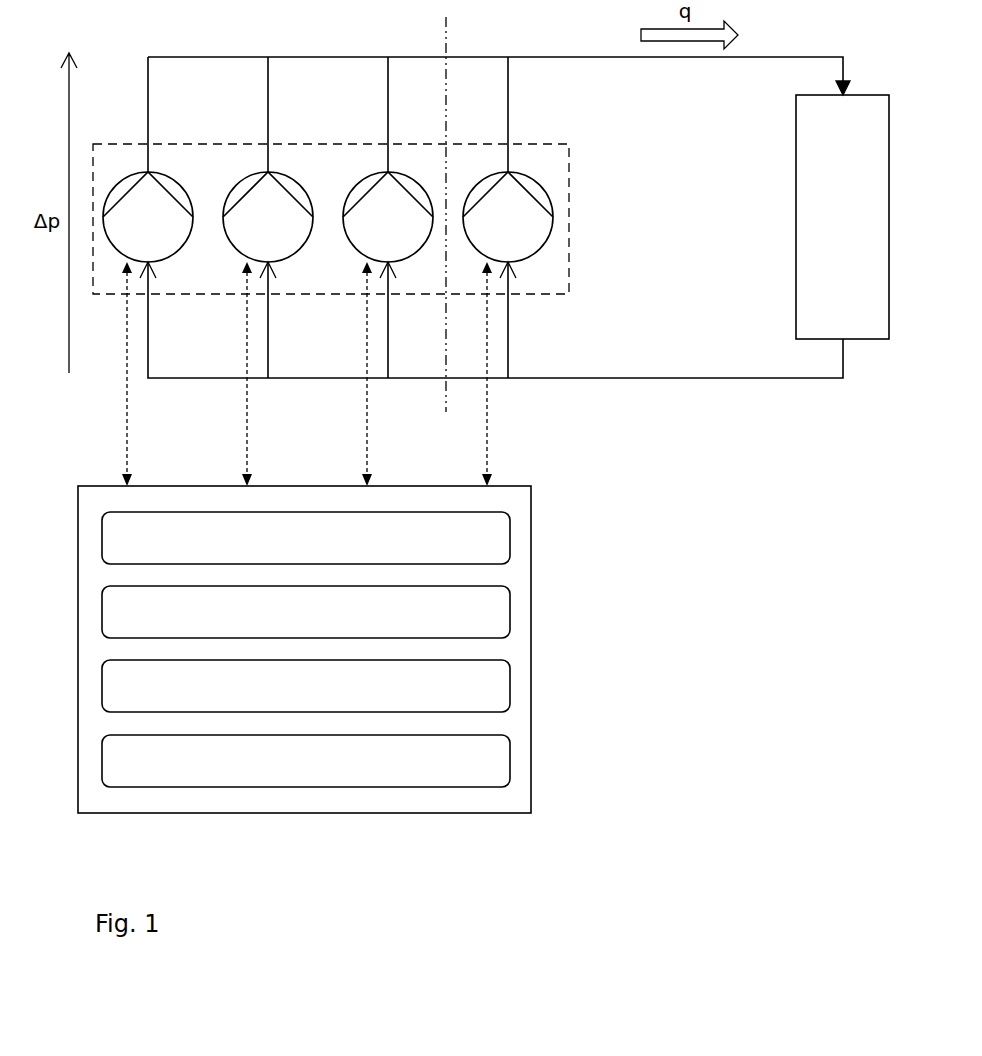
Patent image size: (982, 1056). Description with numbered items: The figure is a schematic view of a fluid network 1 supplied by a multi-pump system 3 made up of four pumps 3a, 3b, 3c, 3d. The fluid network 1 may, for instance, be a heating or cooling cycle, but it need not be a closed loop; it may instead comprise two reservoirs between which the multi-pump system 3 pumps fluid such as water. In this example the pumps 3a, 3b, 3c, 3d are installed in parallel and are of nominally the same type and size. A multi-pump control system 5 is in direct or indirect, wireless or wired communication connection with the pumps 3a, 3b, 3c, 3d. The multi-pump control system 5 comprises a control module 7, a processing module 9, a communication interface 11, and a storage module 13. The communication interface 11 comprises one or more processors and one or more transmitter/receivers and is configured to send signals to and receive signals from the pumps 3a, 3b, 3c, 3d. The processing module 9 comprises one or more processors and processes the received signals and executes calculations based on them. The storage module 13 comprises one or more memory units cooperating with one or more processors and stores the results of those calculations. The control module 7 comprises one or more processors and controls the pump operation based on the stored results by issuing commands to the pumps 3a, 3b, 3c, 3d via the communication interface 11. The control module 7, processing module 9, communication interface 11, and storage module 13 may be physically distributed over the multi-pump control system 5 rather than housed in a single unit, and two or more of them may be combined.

The fluid network 1 is at (754, 239).
The multi-pump system 3 is at (569, 174).
The pump 3a is at (188, 193).
The pump 3b is at (308, 193).
The pump 3c is at (428, 193).
The pump 3d is at (548, 193).
The multi-pump control system 5 is at (340, 813).
The control module 7 is at (510, 538).
The processing module 9 is at (510, 605).
The communication interface 11 is at (510, 682).
The storage module 13 is at (510, 757).